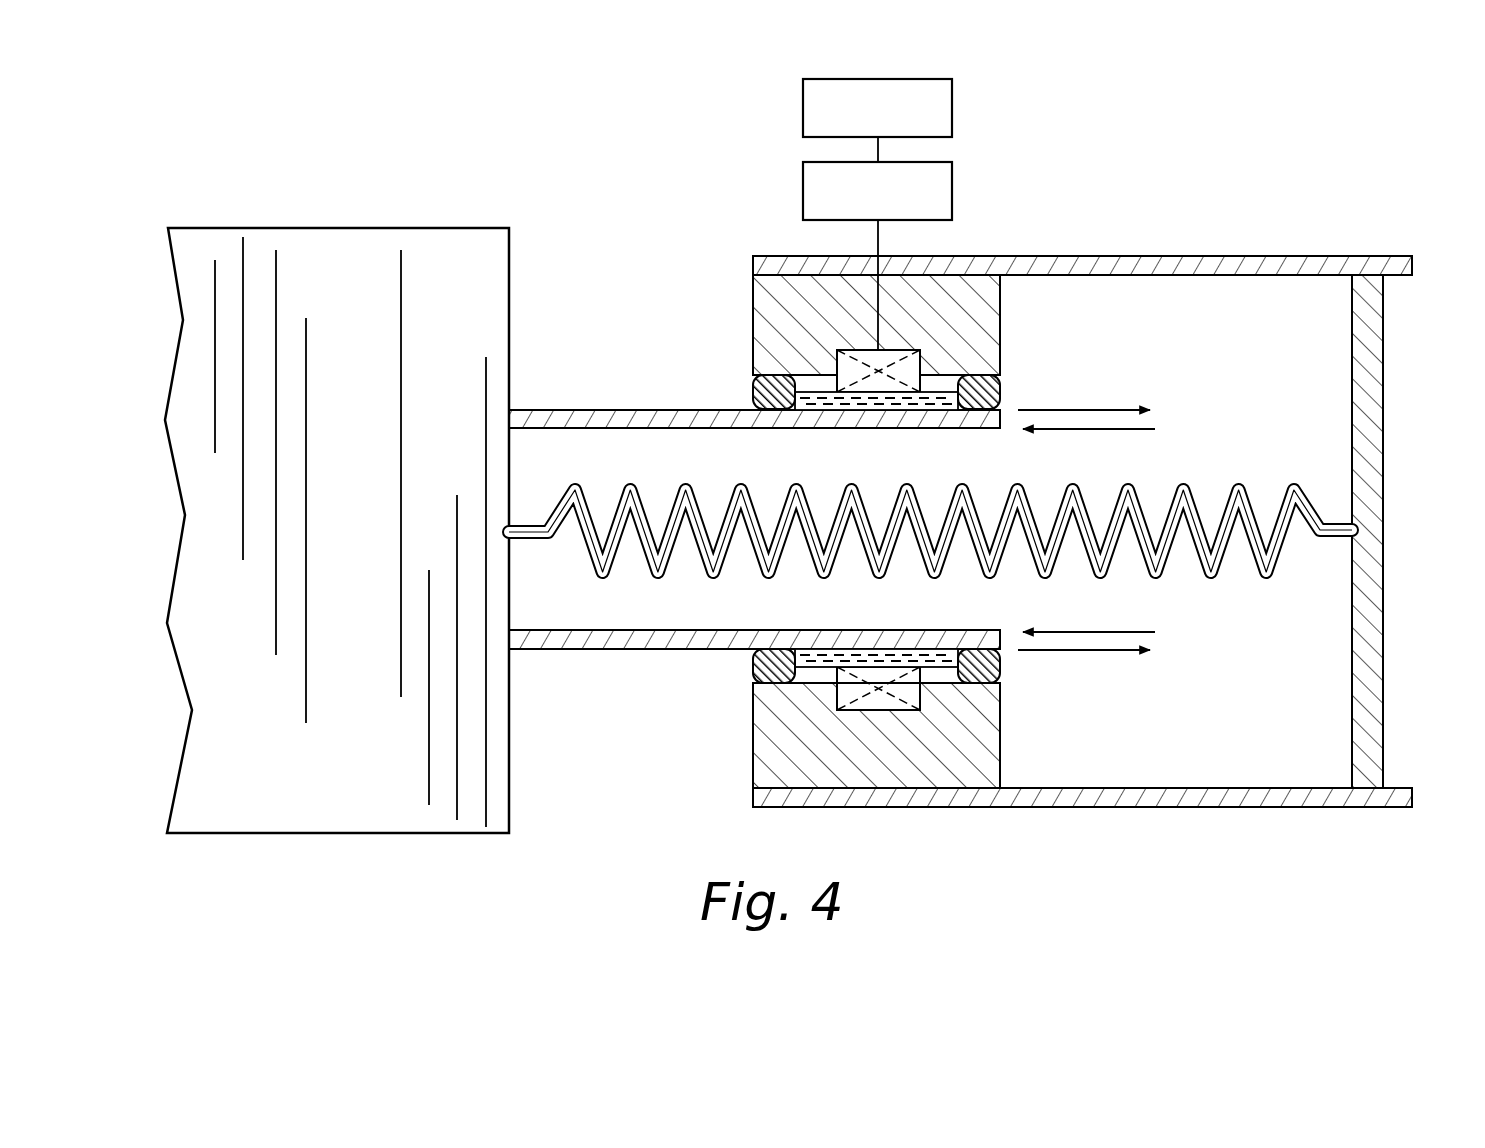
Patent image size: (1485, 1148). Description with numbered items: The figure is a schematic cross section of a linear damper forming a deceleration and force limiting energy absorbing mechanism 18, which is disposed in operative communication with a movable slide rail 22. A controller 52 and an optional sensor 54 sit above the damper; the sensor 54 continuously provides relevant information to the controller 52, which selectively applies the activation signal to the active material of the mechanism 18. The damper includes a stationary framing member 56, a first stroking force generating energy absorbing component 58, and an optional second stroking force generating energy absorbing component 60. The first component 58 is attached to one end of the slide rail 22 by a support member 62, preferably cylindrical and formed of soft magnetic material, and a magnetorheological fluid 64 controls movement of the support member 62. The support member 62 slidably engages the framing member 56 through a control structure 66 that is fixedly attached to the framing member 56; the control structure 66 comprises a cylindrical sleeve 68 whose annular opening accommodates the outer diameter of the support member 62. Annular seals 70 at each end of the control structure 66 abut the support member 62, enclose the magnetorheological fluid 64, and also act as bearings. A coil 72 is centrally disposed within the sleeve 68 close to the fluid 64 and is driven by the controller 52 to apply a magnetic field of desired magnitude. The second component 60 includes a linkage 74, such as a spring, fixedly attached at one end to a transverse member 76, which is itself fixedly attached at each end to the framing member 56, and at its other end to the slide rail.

The deceleration and force limiting energy absorbing mechanism 18 is at (1232, 192).
The slide rail 22 is at (306, 220).
The controller 52 is at (952, 190).
The sensor 54 is at (952, 102).
The stationary framing member 56 is at (1218, 807).
The first stroking force generating energy absorbing component 58 is at (654, 658).
The second stroking force generating energy absorbing component 60 is at (627, 588).
The support member 62 is at (572, 410).
The magnetorheological fluid 64 is at (875, 660).
The control structure 66 is at (743, 746).
The cylindrical sleeve 68 is at (935, 750).
The annular seals 70 is at (755, 393).
The coil 72 is at (893, 352).
The linkage 74 is at (1157, 493).
The transverse member 76 is at (1383, 570).